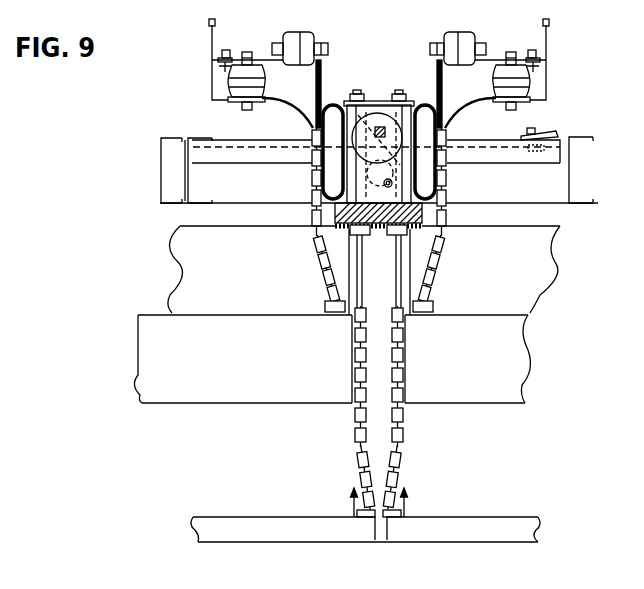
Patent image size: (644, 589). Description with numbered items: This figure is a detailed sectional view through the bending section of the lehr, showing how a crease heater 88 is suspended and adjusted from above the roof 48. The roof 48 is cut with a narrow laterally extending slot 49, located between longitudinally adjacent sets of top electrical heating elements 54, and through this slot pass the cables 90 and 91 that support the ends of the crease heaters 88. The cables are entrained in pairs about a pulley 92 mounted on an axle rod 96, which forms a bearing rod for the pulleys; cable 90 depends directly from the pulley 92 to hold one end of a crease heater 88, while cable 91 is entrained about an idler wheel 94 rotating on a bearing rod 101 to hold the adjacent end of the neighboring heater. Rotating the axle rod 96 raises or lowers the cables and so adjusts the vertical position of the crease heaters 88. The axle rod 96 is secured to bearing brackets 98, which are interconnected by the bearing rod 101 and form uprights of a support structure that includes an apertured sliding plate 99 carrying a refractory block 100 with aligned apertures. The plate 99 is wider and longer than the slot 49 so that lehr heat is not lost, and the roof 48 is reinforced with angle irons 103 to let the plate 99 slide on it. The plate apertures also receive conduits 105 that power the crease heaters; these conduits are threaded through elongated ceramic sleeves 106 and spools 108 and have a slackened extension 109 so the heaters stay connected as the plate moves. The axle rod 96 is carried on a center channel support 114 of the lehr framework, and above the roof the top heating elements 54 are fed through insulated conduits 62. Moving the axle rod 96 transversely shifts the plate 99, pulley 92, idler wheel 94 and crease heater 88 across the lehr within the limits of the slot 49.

The roof 48 is at (180, 272).
The slots 49 is at (382, 312).
The top electrical heating elements 54 is at (146, 357).
The conduit 62 is at (317, 85).
The crease heaters 88 is at (371, 536).
The cable 90 is at (356, 470).
The cable 91 is at (405, 473).
The pulley 92 is at (375, 106).
The idler wheel 94 is at (392, 185).
The axle rod 96 is at (379, 106).
The bearing brackets 98 is at (442, 172).
The sliding plate 99 is at (334, 222).
The refractory block 100 is at (424, 212).
The bearing rod 101 is at (312, 188).
The angle irons 103 is at (317, 248).
The conduits 105 is at (355, 300).
The ceramic sleeves 106 is at (378, 237).
The spools 108 is at (362, 433).
The slackened extension 109 is at (331, 105).
The center channel support 114 is at (387, 106).